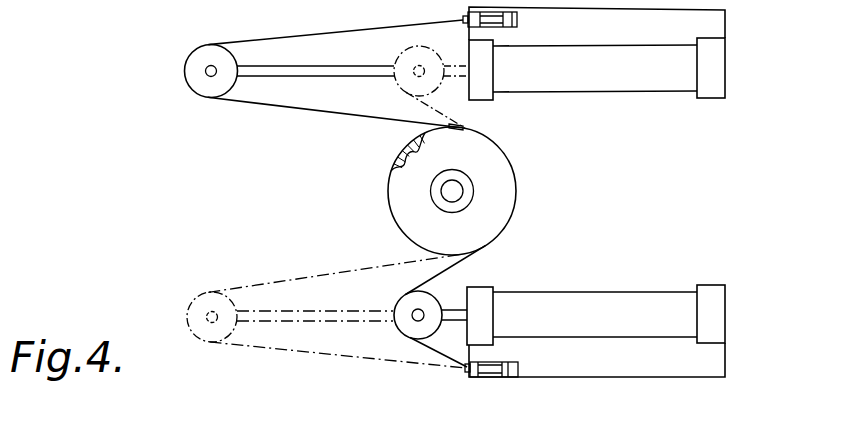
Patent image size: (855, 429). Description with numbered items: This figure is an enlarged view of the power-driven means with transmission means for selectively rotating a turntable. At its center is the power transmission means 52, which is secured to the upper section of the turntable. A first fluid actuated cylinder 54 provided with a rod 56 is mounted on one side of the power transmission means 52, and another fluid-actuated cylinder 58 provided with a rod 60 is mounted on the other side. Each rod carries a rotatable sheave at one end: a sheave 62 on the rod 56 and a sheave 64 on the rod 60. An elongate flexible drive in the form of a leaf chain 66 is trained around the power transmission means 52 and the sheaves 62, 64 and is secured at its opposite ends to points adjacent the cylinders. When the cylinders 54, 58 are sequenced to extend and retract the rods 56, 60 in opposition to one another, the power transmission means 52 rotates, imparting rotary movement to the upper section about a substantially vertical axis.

The power transmission means 52 is at (503, 191).
The first fluid actuated cylinder 54 is at (568, 83).
The rod 56 is at (334, 71).
The fluid-actuated cylinder 58 is at (557, 300).
The rod 60 is at (458, 314).
The rotatable sheave 62 is at (193, 75).
The rotatable sheave 64 is at (407, 309).
The leaf chain 66 is at (333, 33).